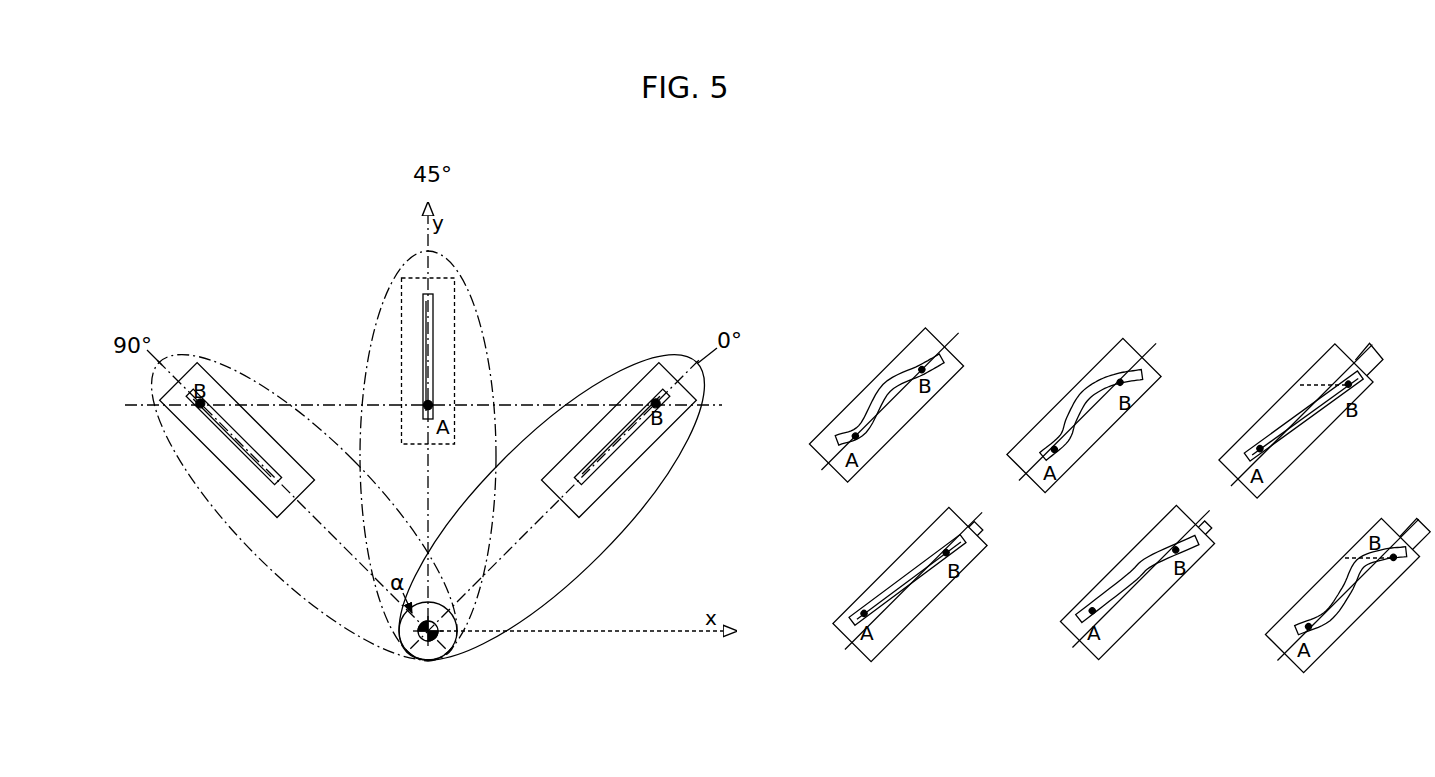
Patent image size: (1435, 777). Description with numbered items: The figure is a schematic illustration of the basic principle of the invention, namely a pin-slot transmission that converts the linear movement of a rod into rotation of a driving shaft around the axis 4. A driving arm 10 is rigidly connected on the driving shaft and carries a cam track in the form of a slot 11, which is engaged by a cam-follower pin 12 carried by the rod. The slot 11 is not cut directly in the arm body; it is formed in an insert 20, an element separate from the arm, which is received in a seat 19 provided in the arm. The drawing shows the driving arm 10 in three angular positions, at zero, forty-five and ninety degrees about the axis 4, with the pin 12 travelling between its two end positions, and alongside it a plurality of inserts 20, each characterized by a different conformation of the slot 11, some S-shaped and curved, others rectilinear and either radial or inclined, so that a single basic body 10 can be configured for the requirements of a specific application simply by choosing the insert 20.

The axis 4 is at (442, 638).
The driving arm 10 is at (487, 323).
The slot 11 is at (895, 390).
The cam-follower pin 12 is at (432, 403).
The seat 19 is at (457, 297).
The insert 20 is at (410, 325).